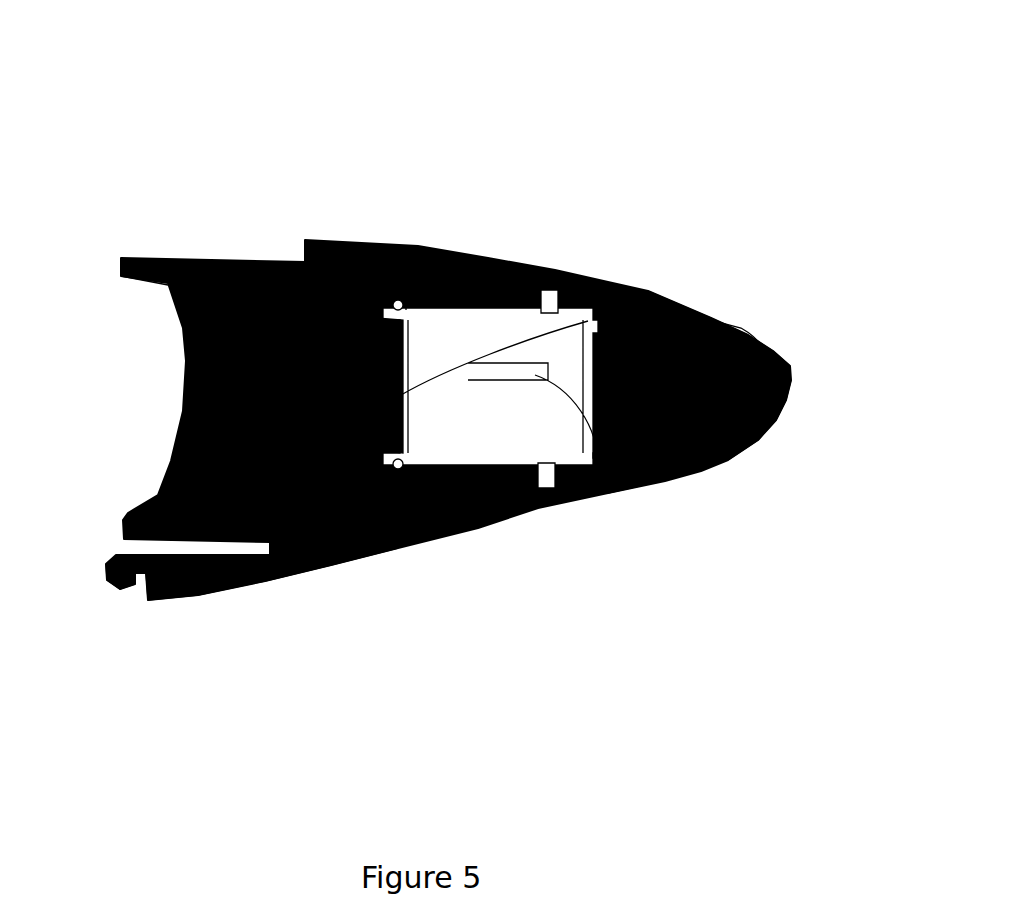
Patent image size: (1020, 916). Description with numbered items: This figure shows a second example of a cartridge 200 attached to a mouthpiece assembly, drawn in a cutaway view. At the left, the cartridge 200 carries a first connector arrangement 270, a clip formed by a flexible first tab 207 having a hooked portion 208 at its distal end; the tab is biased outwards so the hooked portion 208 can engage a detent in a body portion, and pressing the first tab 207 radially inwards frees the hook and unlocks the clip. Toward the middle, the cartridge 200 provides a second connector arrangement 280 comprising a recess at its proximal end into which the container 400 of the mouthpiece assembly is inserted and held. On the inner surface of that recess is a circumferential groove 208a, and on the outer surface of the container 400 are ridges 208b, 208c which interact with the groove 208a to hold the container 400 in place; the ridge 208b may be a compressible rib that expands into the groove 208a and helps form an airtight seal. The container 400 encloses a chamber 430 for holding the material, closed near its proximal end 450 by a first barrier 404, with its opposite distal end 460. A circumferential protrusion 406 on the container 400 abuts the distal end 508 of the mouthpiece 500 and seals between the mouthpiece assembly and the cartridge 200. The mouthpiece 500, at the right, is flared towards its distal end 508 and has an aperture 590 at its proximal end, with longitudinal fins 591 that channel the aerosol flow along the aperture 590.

The cartridge 200 is at (472, 454).
The first tab 207 is at (197, 590).
The hooked portion 208 is at (110, 548).
The circumferential groove 208a is at (393, 290).
The ridge 208b is at (386, 294).
The ridge 208c is at (620, 480).
The first connector arrangement 270 is at (152, 708).
The second connector arrangement 280 is at (483, 289).
The container 400 is at (448, 460).
The first barrier 404 is at (680, 296).
The protrusion 406 is at (541, 282).
The chamber 430 is at (500, 430).
The proximal end 450 is at (692, 300).
The distal end 460 is at (370, 308).
The mouthpiece 500 is at (711, 526).
The distal end 508 is at (525, 500).
The aperture 590 is at (775, 397).
The longitudinal fins 591 is at (700, 462).